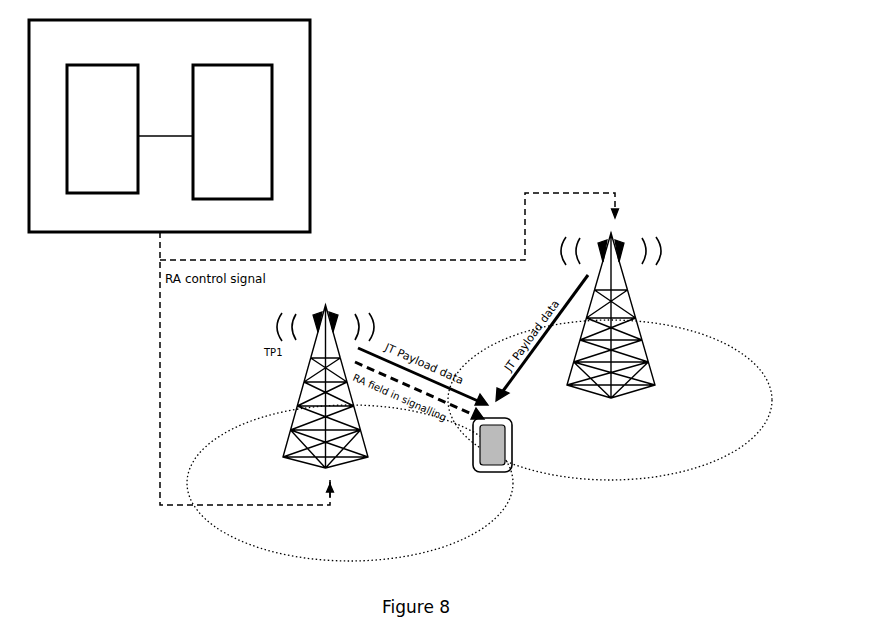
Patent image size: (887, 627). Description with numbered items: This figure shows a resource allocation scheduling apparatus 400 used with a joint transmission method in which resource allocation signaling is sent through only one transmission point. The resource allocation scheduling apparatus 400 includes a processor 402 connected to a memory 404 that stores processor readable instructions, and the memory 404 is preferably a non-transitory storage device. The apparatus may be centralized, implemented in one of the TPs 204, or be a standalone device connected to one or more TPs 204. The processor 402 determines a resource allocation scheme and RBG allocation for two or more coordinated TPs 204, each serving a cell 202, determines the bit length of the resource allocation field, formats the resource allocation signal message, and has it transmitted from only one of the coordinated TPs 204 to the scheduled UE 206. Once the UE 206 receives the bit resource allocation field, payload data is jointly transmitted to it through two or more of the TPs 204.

The resource allocation scheduling apparatus 400 is at (76, 52).
The processor 402 is at (112, 97).
The memory 404 is at (239, 97).
The cell 202 is at (656, 448).
The TP 204 is at (635, 310).
The UE 206 is at (510, 465).